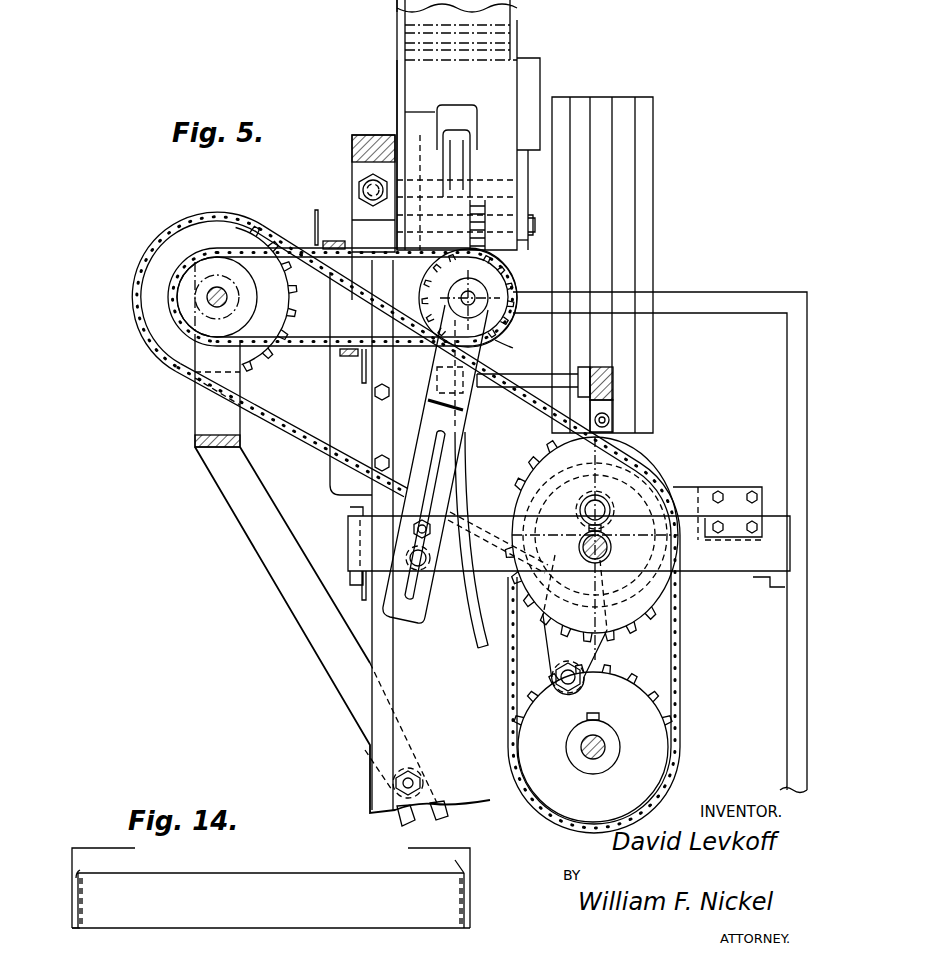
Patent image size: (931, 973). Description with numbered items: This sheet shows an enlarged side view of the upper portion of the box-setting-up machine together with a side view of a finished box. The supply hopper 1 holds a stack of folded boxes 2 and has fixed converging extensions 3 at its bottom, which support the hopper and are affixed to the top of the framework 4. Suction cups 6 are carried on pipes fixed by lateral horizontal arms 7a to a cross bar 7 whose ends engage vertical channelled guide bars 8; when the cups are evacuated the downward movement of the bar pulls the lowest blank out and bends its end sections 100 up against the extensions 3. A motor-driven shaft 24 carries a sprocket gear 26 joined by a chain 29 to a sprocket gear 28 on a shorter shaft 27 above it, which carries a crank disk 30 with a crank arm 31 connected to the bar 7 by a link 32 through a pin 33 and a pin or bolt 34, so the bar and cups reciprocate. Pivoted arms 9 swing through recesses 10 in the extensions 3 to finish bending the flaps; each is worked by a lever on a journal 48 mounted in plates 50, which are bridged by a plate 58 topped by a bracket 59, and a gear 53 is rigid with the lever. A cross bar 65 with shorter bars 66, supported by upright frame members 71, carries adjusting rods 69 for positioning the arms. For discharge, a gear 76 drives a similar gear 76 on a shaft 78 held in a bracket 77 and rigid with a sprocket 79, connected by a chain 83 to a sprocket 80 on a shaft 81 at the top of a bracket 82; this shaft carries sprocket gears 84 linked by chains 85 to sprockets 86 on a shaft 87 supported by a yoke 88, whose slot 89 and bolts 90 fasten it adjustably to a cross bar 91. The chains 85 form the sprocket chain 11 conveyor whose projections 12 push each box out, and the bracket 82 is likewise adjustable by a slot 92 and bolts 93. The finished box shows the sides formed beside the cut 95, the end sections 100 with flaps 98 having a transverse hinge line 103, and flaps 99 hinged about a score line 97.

In FIG. 5, the supply hopper 1 is at (520, 35).
In FIG. 5, the folded boxes 2 is at (398, 8).
In FIG. 5, the converging extensions 3 is at (410, 75).
In FIG. 5, the framework 4 is at (742, 292).
In FIG. 5, the suction cups 6 is at (498, 342).
In FIG. 5, the cross bar 7 is at (602, 375).
In FIG. 5, the lateral horizontal arms 7a is at (492, 388).
In FIG. 5, the channelled guide bars 8 is at (633, 150).
In FIG. 5, the pivoted arms 9 is at (430, 112).
In FIG. 5, the recesses 10 is at (477, 120).
In FIG. 5, the sprocket chain 11 is at (330, 243).
In FIG. 5, the projections 12 is at (316, 215).
In FIG. 5, the shaft 24 is at (598, 742).
In FIG. 5, the sprocket gear 26 is at (660, 760).
In FIG. 5, the shaft 27 is at (588, 540).
In FIG. 5, the sprocket gear 28 is at (515, 625).
In FIG. 5, the chain 29 is at (673, 615).
In FIG. 5, the crank disk 30 is at (625, 615).
In FIG. 5, the crank arm 31 is at (548, 635).
In FIG. 5, the link 32 is at (650, 448).
In FIG. 5, the pin 33 is at (563, 690).
In FIG. 5, the pin or bolt 34 is at (606, 420).
In FIG. 5, the journal 48 is at (533, 225).
In FIG. 5, the plates 50 is at (520, 258).
In FIG. 5, the gear 53 is at (405, 247).
In FIG. 5, the plate 58 is at (490, 146).
In FIG. 5, the bracket 59 is at (535, 65).
In FIG. 5, the cross bar 65 is at (365, 140).
In FIG. 5, the shorter bars 66 is at (375, 240).
In FIG. 5, the adjusting rod 69 is at (362, 185).
In FIG. 5, the upright frame members 71 is at (345, 392).
In FIG. 5, the gear 76 is at (610, 510).
In FIG. 5, the bracket 77 is at (748, 490).
In FIG. 5, the shaft 78 is at (540, 493).
In FIG. 5, the sprocket 79 is at (545, 467).
In FIG. 5, the sprocket 80 is at (165, 350).
In FIG. 5, the shaft 81 is at (210, 300).
In FIG. 5, the bracket 82 is at (225, 475).
In FIG. 5, the chain 83 is at (318, 440).
In FIG. 5, the sprocket gears 84 is at (180, 257).
In FIG. 5, the chains 85 is at (302, 346).
In FIG. 5, the sprockets 86 is at (495, 282).
In FIG. 5, the shaft 87 is at (466, 298).
In FIG. 5, the yoke 88 is at (437, 403).
In FIG. 5, the slot 89 is at (408, 615).
In FIG. 5, the bolts 90 is at (430, 557).
In FIG. 5, the cross bar 91 is at (352, 536).
In FIG. 5, the slot 92 is at (432, 800).
In FIG. 5, the bolts 93 is at (412, 770).
In FIG. 14, the cut 95 is at (235, 875).
In FIG. 14, the score line 97 is at (470, 858).
In FIG. 14, the flaps 98 is at (100, 848).
In FIG. 14, the flaps 99 is at (72, 928).
In FIG. 14, the end sections 100 is at (72, 880).
In FIG. 14, the transverse hinge line 103 is at (455, 860).